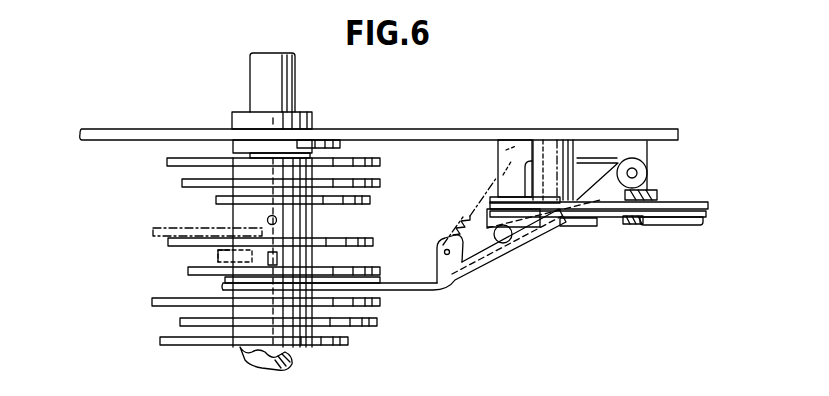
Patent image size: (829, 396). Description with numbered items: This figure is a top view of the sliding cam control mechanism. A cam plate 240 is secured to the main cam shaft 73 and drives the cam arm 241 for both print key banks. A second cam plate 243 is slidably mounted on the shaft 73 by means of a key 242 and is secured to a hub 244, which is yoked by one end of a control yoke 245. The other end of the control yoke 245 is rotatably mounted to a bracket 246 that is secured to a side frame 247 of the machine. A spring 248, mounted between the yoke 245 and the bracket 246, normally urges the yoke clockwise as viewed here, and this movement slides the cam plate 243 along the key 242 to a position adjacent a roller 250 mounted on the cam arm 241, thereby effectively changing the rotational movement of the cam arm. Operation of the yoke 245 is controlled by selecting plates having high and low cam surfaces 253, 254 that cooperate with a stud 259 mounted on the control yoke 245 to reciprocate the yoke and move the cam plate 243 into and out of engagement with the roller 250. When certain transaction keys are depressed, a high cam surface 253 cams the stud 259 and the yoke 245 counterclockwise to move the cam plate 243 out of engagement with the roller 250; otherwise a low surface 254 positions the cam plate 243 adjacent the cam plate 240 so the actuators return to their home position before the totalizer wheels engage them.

The main cam shaft 73 is at (292, 87).
The side frame 247 is at (425, 129).
The bracket 246 is at (590, 147).
The spring 248 is at (497, 175).
The cam arm 241 is at (170, 227).
The cam plate 240 is at (170, 240).
The roller 250 is at (220, 251).
The key 242 is at (281, 258).
The second cam plate 243 is at (200, 270).
The hub 244 is at (222, 291).
The control yoke 245 is at (410, 290).
The stud 259 is at (508, 243).
The high cam surfaces 253 is at (583, 227).
The low cam surfaces 254 is at (608, 217).